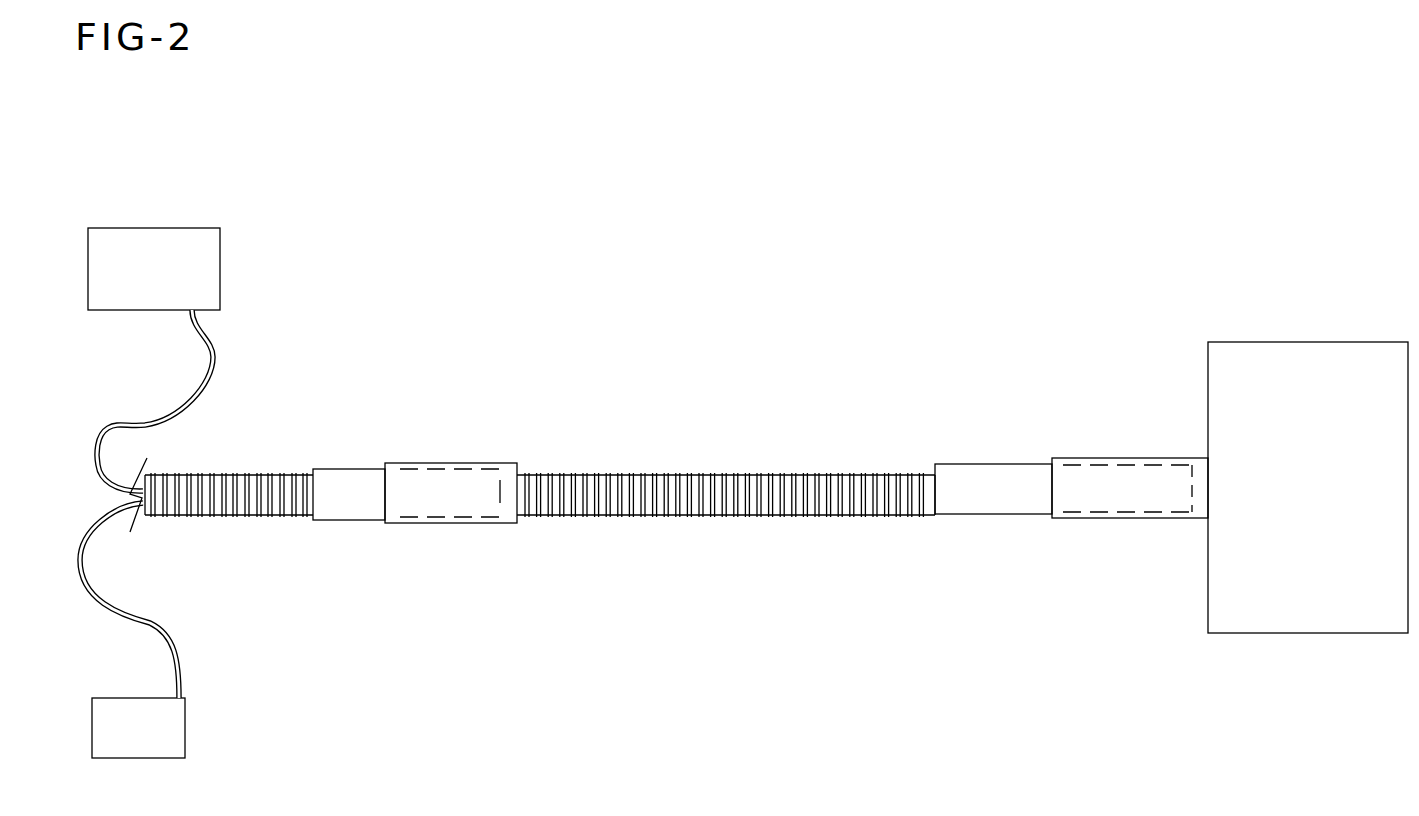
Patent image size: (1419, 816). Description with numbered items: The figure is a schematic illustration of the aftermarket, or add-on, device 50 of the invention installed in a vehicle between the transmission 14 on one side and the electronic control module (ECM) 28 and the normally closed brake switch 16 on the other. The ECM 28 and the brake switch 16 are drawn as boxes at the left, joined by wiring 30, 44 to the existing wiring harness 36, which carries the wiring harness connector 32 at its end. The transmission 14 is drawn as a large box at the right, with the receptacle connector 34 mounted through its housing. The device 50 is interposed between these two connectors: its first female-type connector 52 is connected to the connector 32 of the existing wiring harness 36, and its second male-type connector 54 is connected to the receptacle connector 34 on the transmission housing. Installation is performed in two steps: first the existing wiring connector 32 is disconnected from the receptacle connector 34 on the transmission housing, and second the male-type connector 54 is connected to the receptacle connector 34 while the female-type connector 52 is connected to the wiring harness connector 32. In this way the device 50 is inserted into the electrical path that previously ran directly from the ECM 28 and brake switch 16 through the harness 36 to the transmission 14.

The vehicle transmission 14 is at (1308, 357).
The brake switch 16 is at (220, 265).
The electronic control module (ECM) 28 is at (185, 728).
The electrical wiring 30 is at (232, 504).
The electrical conductors 44 is at (170, 630).
The wiring harness connector 32 is at (345, 469).
The receptacle connector 34 is at (1105, 453).
The existing wiring harness 36 is at (213, 477).
The aftermarket device 50 is at (683, 465).
The first female-type connector 52 is at (453, 462).
The second male-type connector 54 is at (993, 514).